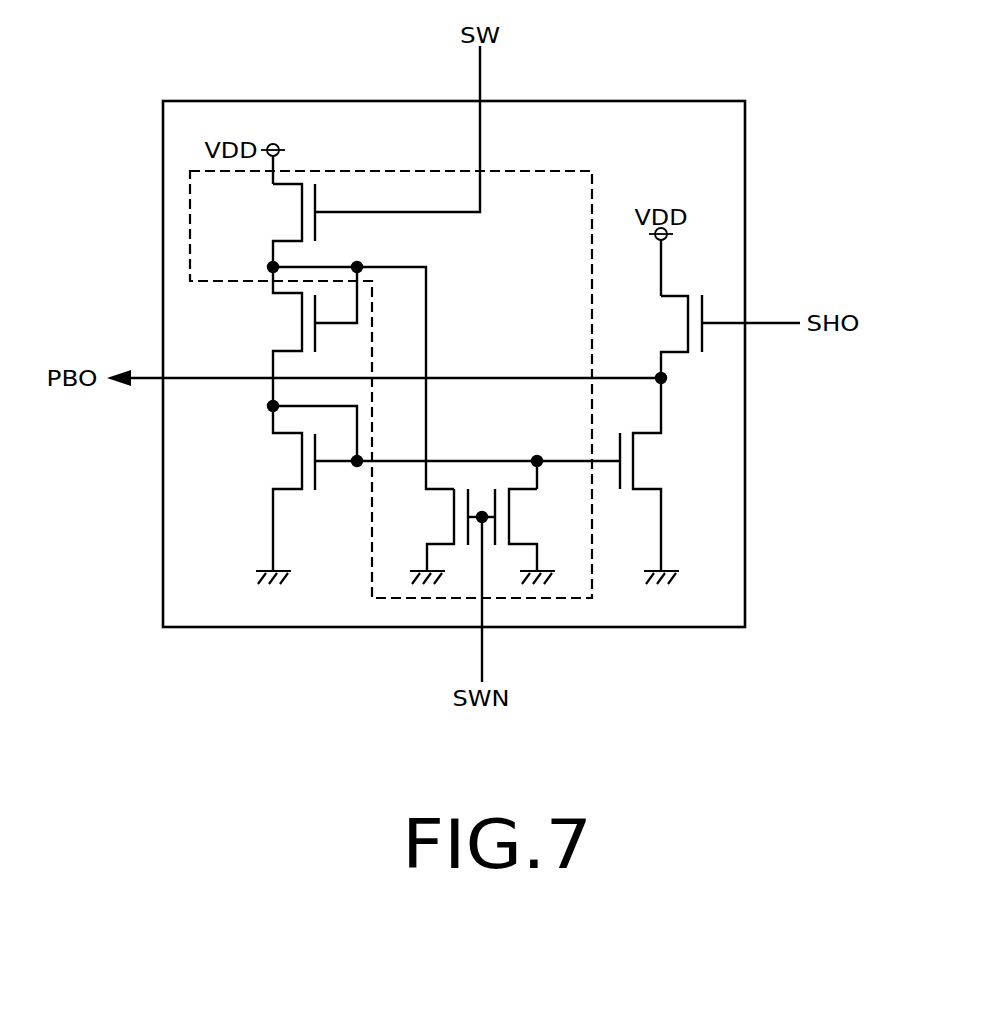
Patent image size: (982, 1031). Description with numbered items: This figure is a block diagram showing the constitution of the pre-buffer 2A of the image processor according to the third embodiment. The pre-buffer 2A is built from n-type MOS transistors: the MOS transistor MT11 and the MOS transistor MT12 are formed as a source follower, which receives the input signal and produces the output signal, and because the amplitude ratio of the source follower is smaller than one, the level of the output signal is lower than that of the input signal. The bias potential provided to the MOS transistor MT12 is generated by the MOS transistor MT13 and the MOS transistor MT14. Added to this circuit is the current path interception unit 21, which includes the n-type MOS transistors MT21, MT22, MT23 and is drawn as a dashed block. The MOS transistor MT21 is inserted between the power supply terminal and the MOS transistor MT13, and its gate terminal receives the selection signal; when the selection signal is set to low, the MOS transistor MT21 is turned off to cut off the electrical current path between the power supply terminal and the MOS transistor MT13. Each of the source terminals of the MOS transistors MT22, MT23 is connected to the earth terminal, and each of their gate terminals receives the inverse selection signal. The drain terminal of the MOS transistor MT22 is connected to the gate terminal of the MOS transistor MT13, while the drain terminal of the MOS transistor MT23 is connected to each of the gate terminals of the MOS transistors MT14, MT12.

The pre-buffer 2A is at (680, 101).
The current path interception unit 21 is at (500, 170).
The MOS transistor MT11 is at (655, 336).
The MOS transistor MT12 is at (667, 474).
The MOS transistor MT13 is at (266, 336).
The MOS transistor MT14 is at (266, 488).
The MOS transistor MT21 is at (267, 225).
The MOS transistor MT22 is at (424, 530).
The MOS transistor MT23 is at (539, 530).